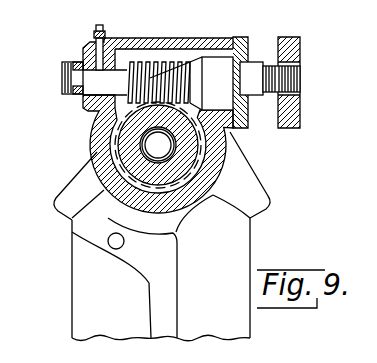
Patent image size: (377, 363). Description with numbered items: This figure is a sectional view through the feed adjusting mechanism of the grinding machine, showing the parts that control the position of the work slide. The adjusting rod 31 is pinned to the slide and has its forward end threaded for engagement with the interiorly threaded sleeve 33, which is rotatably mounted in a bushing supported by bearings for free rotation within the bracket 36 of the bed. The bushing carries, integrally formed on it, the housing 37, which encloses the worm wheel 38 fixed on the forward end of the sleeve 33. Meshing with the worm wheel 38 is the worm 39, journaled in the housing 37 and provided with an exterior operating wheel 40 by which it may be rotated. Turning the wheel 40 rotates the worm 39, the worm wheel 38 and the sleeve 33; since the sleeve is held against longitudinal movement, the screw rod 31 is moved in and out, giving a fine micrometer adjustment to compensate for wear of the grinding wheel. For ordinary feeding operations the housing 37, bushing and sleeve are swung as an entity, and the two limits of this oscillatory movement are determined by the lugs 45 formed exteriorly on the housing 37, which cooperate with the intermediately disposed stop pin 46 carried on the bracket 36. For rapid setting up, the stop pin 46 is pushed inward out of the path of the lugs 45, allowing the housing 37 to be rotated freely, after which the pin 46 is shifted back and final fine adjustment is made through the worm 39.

The adjusting rod 31 is at (155, 150).
The interiorly threaded sleeve 33 is at (185, 146).
The bracket 36 is at (224, 268).
The housing 37 is at (170, 37).
The worm wheel 38 is at (118, 141).
The worm 39 is at (212, 36).
The operating wheel 40 is at (300, 48).
The lugs 45 is at (68, 213).
The stop pin 46 is at (110, 246).